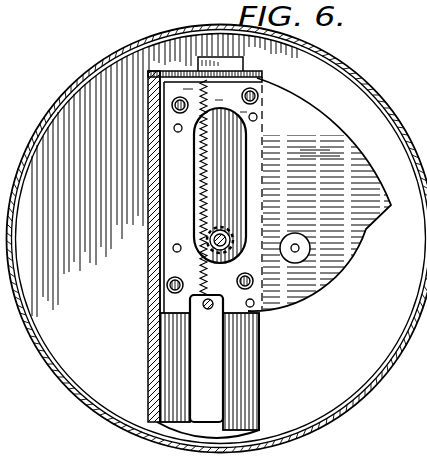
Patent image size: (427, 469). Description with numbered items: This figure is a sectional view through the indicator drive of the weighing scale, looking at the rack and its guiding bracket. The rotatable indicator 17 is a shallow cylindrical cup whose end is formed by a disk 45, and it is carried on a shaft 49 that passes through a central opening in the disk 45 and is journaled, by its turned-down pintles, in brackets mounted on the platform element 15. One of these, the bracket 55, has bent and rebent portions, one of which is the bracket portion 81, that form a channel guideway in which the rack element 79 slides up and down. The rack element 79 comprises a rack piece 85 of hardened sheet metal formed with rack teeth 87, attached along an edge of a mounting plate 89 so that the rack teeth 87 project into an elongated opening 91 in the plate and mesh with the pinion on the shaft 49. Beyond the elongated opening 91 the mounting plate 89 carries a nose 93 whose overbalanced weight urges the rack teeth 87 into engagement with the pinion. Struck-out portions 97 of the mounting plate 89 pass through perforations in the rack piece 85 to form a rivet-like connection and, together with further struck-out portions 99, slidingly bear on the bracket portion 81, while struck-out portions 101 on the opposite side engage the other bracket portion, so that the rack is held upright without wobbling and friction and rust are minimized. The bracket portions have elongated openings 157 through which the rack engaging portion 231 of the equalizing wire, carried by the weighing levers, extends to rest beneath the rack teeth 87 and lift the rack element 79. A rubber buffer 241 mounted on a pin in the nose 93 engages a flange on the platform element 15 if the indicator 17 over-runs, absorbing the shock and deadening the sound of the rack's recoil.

The platform element 15 is at (423, 0).
The indicator 17 is at (75, 398).
The disk 45 is at (351, 84).
The shaft 49 is at (226, 231).
The bracket 55 is at (148, 343).
The rack element 79 is at (175, 177).
The bracket portion 81 is at (247, 345).
The rack piece 85 is at (193, 187).
The rack teeth 87 is at (214, 190).
The mounting plate 89 is at (331, 147).
The elongated opening 91 is at (266, 138).
The nose 93 is at (357, 237).
The struck-out portions 97 is at (166, 284).
The struck-out portions 99 is at (257, 282).
The struck-out portions 101 is at (258, 306).
The elongated openings 157 is at (218, 369).
The rack engaging portion 231 is at (196, 306).
The buffer 241 is at (305, 256).